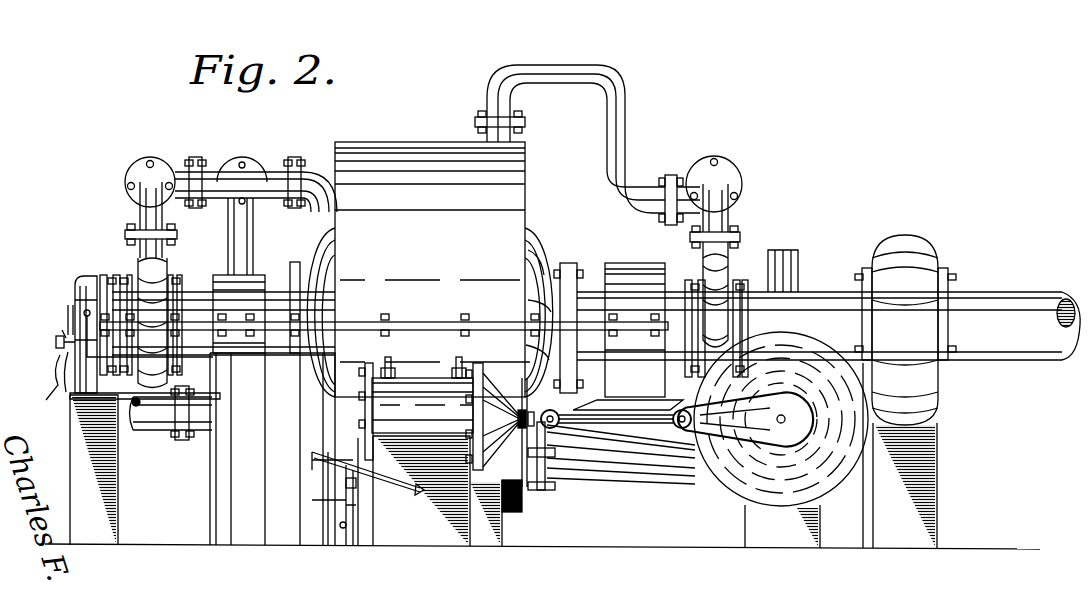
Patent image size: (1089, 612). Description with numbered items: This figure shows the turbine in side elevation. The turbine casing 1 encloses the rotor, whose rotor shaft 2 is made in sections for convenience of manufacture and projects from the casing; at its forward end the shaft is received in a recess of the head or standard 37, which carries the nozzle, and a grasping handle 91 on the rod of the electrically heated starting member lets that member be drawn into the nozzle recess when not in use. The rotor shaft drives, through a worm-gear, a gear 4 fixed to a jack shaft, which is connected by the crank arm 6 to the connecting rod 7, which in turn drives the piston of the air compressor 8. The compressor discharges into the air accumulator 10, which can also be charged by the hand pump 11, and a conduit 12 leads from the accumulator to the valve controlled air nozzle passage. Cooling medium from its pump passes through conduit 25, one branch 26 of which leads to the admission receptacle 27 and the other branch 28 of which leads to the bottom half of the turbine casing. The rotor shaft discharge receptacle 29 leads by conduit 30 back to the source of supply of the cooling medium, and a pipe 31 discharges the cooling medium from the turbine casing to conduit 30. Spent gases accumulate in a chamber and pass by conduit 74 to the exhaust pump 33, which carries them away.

The turbine casing 1 is at (385, 144).
The rotor shaft 2 is at (966, 300).
The gear 4 is at (716, 474).
The crank arm 6 is at (770, 419).
The connecting rod 7 is at (620, 413).
The air compressor 8 is at (518, 408).
The air accumulator 10 is at (272, 449).
The hand pump 11 is at (362, 522).
The conduit 12 is at (90, 375).
The conduit 25 is at (246, 242).
The branch 26 is at (150, 213).
The admission receptacle 27 is at (136, 280).
The branch 28 is at (316, 168).
The rotor shaft discharge receptacle 29 is at (730, 270).
The conduit 30 is at (738, 222).
The pipe 31 is at (612, 85).
The exhaust pump 33 is at (900, 238).
The head or standard 37 is at (80, 290).
The conduit 74 is at (614, 455).
The grasping handle 91 is at (56, 344).